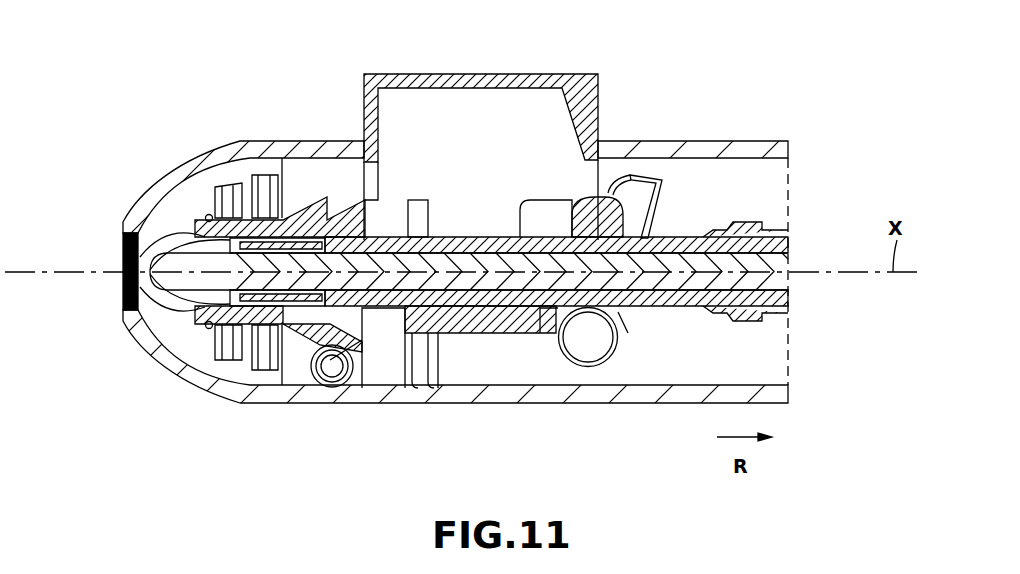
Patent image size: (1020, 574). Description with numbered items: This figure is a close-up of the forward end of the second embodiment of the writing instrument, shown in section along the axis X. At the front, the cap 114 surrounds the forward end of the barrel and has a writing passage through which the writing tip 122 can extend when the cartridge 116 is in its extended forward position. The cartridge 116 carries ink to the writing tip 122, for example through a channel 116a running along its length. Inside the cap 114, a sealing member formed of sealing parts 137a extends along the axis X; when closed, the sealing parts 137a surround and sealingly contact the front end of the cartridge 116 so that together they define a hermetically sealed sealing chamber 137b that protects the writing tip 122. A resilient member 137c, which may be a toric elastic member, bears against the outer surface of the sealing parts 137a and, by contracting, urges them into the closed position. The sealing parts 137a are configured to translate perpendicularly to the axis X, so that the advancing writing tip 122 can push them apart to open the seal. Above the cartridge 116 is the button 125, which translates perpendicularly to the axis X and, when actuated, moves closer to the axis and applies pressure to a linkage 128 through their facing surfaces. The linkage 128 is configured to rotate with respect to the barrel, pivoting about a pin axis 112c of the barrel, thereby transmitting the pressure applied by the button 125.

The cap 114 is at (183, 147).
The sealing chamber 137b is at (261, 160).
The resilient member 137c is at (211, 215).
The sealing parts 137a is at (166, 205).
The button 125 is at (396, 74).
The linkage 128 is at (632, 196).
The cartridge 116 is at (686, 232).
The channel 116a is at (678, 285).
The writing tip 122 is at (220, 285).
The pin axis 112c is at (592, 338).